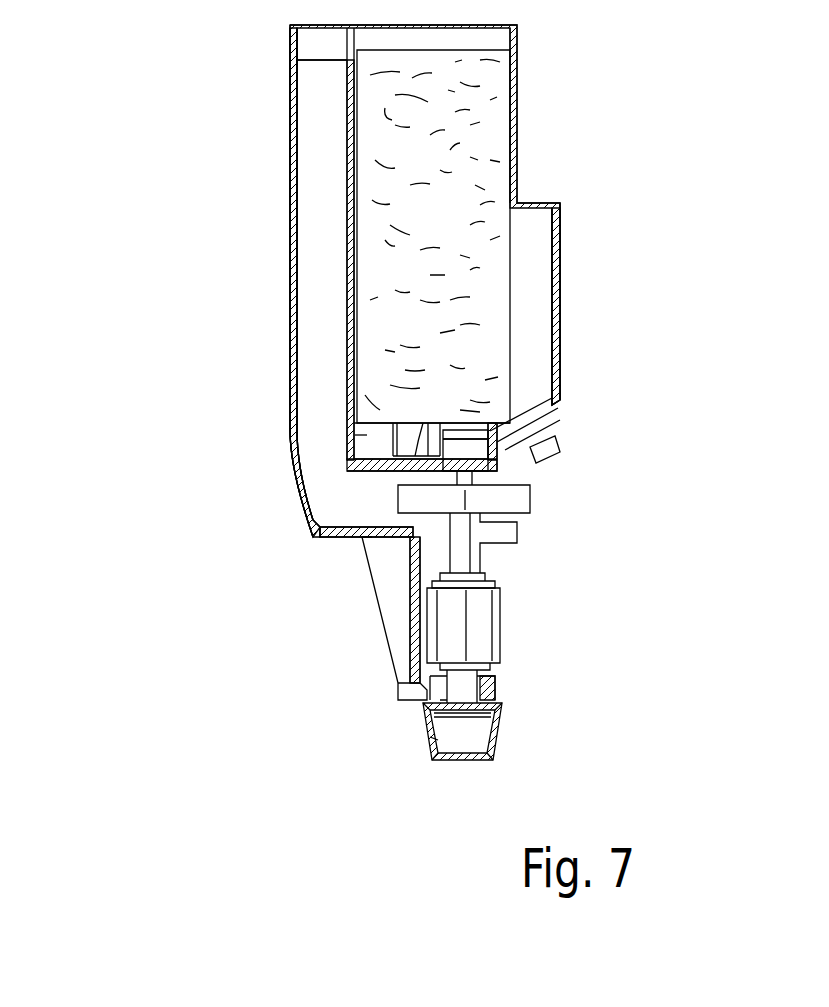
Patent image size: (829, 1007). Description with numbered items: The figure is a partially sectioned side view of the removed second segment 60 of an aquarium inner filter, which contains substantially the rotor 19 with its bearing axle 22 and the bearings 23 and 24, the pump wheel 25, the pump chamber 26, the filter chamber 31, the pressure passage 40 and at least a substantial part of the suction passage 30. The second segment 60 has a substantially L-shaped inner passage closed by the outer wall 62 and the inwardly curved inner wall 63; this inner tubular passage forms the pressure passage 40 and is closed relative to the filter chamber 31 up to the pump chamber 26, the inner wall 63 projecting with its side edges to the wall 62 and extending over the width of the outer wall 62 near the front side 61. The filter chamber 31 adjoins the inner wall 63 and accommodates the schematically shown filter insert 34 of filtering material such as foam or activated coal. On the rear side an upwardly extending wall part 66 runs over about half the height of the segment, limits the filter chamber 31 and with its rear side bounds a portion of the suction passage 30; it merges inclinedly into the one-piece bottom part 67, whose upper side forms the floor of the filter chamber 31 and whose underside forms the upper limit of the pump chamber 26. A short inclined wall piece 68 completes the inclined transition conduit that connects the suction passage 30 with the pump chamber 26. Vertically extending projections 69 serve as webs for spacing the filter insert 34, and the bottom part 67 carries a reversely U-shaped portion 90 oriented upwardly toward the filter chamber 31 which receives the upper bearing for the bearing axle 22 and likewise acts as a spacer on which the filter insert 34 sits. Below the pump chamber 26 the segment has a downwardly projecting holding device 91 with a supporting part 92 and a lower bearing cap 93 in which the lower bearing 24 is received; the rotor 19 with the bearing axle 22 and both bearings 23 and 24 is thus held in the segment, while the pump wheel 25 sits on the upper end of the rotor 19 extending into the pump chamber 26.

The rotor 19 is at (480, 635).
The bearing axle 22 is at (467, 480).
The upper bearing 23 is at (473, 460).
The lower bearing 24 is at (470, 732).
The pump wheel 25 is at (510, 503).
The pump chamber 26 is at (322, 535).
The suction passage 30 is at (505, 425).
The filter chamber 31 is at (380, 432).
The filter insert 34 is at (448, 224).
The pressure passage 40 is at (307, 235).
The second segment 60 is at (587, 276).
The front side 61 is at (367, 435).
The outer wall 62 is at (290, 338).
The inner wall 63 is at (347, 183).
The wall part 66 is at (560, 318).
The bottom part 67 is at (415, 456).
The inclined wall piece 68 is at (553, 455).
The projections 69 is at (356, 426).
The reversely U-shaped portion 90 is at (485, 428).
The holding device 91 is at (360, 603).
The supporting part 92 is at (403, 687).
The bearing cap 93 is at (430, 737).